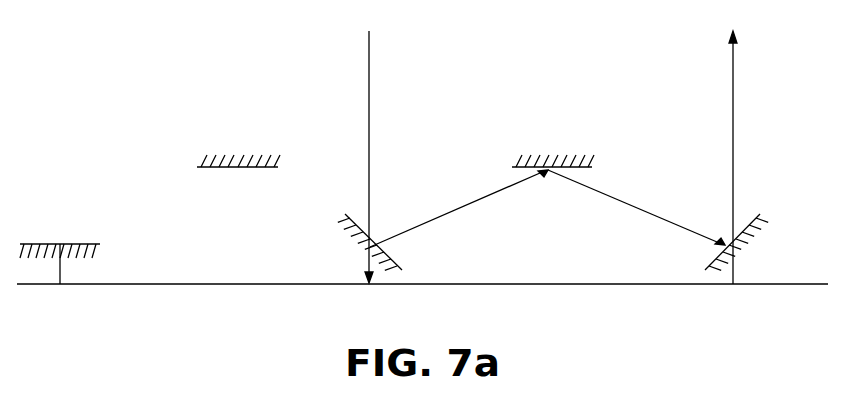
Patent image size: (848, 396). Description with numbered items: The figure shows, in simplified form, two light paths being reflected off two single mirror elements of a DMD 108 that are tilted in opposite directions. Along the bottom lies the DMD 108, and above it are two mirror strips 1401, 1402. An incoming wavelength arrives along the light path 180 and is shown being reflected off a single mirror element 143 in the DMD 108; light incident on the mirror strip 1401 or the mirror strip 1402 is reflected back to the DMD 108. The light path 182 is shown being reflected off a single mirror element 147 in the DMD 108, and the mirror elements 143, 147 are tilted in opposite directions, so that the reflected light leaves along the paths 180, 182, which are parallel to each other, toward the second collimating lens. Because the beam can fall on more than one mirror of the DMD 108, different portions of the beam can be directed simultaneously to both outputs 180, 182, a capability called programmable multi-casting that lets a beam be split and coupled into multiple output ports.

The DMD 108 is at (168, 285).
The light path 180 is at (369, 53).
The light path 182 is at (733, 53).
The mirror strip 1401 is at (238, 155).
The mirror strip 1402 is at (550, 154).
The mirror element 143 is at (397, 261).
The mirror element 147 is at (712, 260).